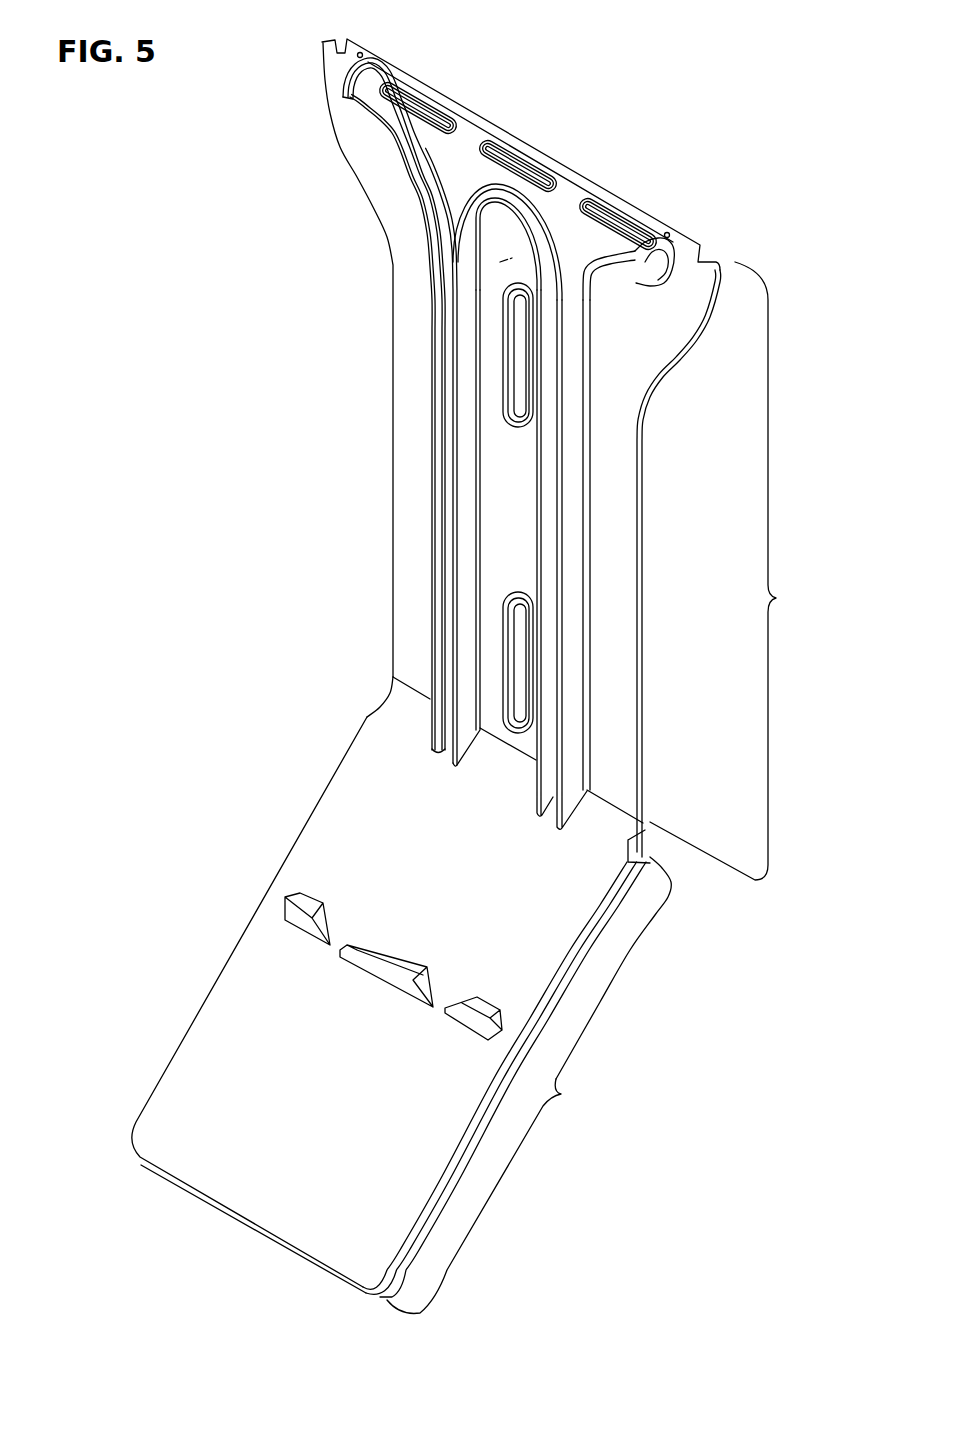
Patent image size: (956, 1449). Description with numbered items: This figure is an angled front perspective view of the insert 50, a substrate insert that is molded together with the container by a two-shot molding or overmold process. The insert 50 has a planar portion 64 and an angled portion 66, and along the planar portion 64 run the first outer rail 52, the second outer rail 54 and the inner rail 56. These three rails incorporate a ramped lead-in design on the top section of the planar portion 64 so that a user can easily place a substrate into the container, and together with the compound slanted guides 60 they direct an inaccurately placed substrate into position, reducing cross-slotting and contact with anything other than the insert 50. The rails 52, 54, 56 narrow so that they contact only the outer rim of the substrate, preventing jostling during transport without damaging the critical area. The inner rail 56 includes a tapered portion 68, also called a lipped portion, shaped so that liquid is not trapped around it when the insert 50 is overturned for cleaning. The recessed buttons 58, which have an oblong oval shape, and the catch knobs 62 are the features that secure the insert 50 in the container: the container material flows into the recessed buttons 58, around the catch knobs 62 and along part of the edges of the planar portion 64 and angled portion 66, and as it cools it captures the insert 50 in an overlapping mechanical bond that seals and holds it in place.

The insert 50 is at (700, 100).
The first outer rail 52 is at (383, 110).
The second outer rail 54 is at (688, 243).
The inner rail 56 is at (520, 207).
The recessed buttons 58 is at (420, 107).
The compound slanted guides 60 is at (312, 897).
The catch knobs 62 is at (719, 262).
The planar portion 64 is at (737, 571).
The angled portion 66 is at (529, 1085).
The tapered portion 68 is at (500, 262).